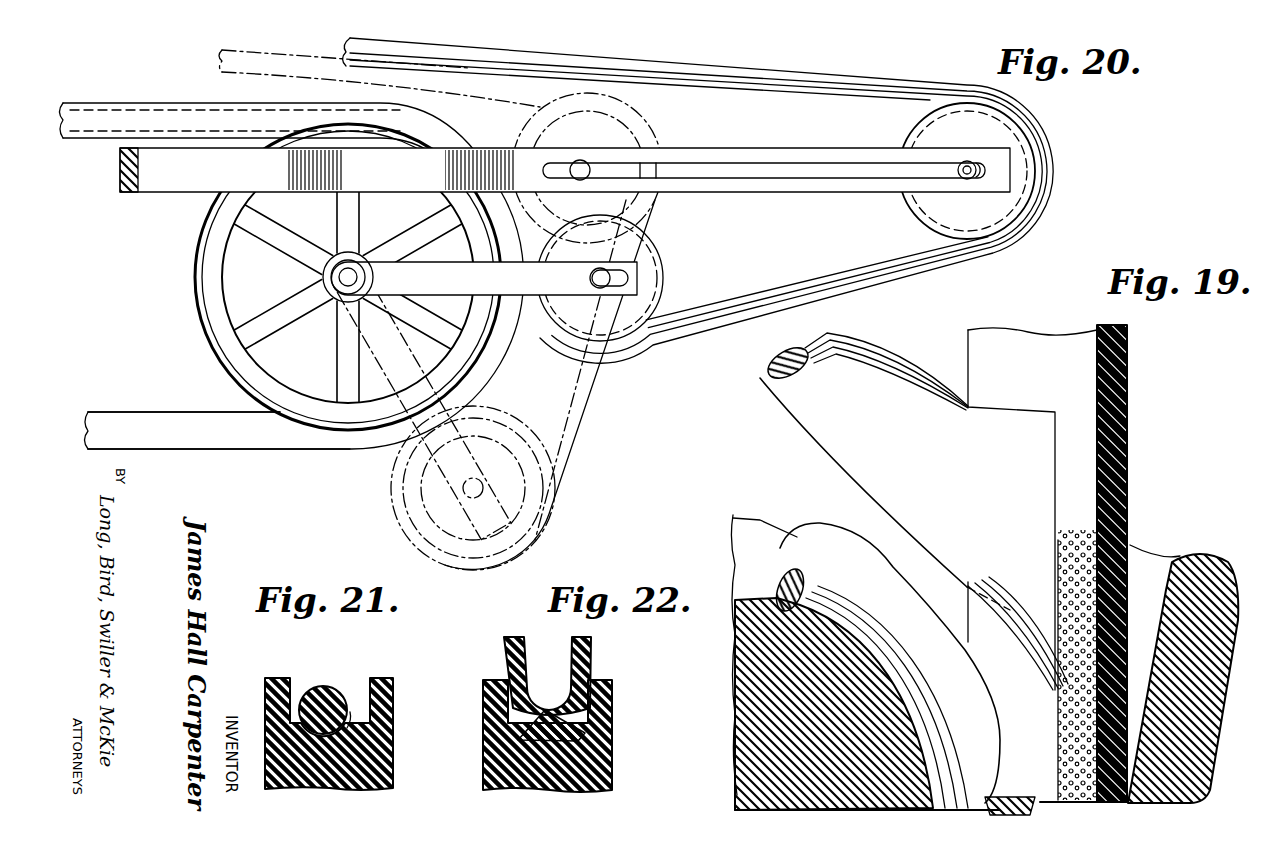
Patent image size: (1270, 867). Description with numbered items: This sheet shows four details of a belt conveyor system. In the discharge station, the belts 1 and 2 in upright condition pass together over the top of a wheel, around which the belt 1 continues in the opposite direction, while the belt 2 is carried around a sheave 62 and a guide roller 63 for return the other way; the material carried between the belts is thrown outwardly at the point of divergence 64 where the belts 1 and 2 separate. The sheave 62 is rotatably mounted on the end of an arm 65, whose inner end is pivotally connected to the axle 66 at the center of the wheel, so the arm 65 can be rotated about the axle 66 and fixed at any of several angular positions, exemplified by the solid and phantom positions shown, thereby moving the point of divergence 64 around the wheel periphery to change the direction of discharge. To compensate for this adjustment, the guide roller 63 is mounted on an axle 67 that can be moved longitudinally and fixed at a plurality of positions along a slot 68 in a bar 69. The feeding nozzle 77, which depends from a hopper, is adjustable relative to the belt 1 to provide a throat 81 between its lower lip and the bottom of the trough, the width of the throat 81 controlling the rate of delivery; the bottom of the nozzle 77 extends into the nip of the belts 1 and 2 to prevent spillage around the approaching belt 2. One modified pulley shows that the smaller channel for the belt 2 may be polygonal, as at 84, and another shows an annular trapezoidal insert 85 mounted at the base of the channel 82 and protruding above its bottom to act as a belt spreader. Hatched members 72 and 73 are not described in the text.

In FIG. 20, the belt 1 is at (158, 421).
In FIG. 19, the belt 1 is at (1128, 372).
In FIG. 22, the belt 1 is at (592, 665).
In FIG. 20, the belt 2 is at (742, 72).
In FIG. 19, the belt 2 is at (838, 540).
In FIG. 21, the belt 2 is at (317, 698).
In FIG. 20, the sheave 62 is at (664, 272).
In FIG. 20, the guide roller 63 is at (912, 211).
In FIG. 20, the point of divergence 64 is at (522, 322).
In FIG. 20, the arm 65 is at (485, 278).
In FIG. 20, the axle 66 is at (359, 279).
In FIG. 20, the axle 67 is at (968, 161).
In FIG. 20, the slot 68 is at (790, 163).
In FIG. 20, the bar 69 is at (183, 176).
In FIG. 19, the block 72 is at (1203, 570).
In FIG. 19, the base block 73 is at (770, 527).
In FIG. 19, the nozzle 77 is at (898, 396).
In FIG. 19, the throat 81 is at (1062, 694).
In FIG. 22, the channel 82 is at (596, 701).
In FIG. 21, the polygonal channel 84 is at (347, 727).
In FIG. 22, the annular trapezoidal insert 85 is at (580, 725).